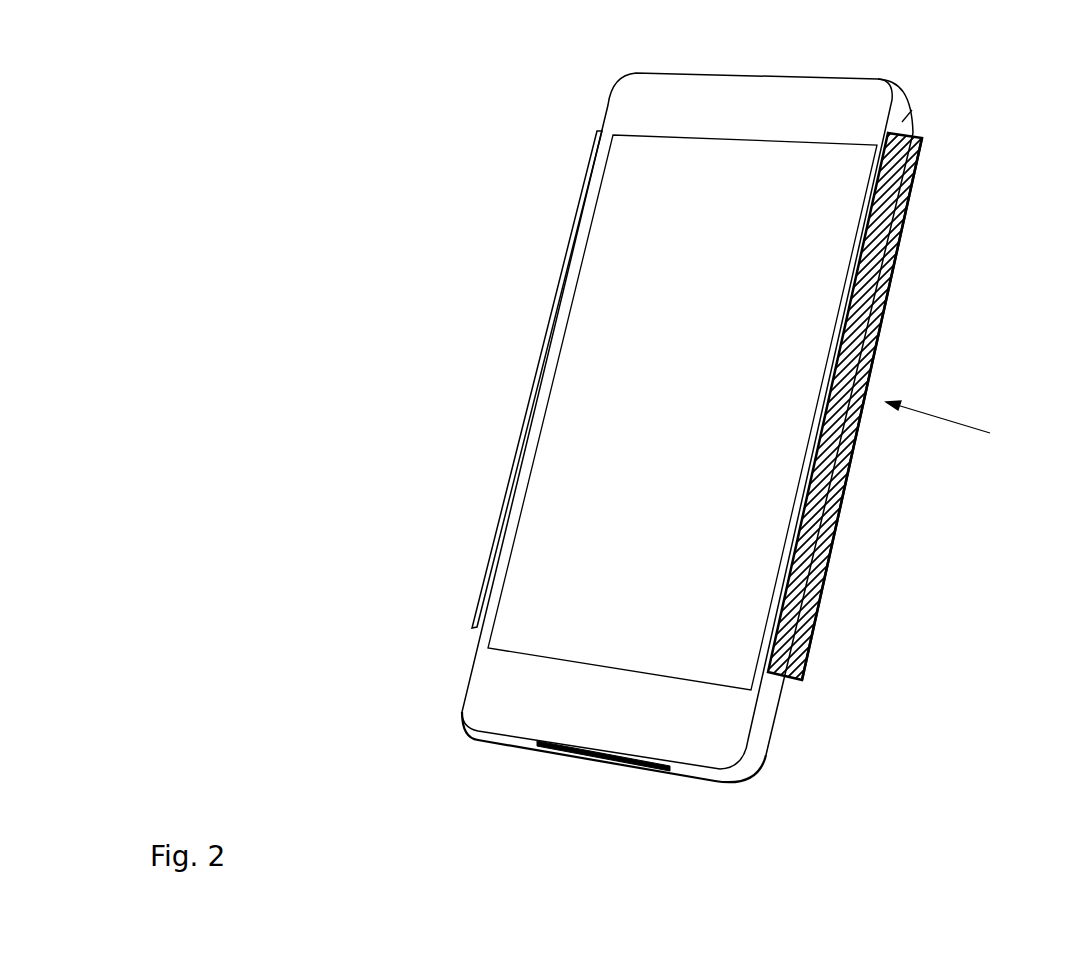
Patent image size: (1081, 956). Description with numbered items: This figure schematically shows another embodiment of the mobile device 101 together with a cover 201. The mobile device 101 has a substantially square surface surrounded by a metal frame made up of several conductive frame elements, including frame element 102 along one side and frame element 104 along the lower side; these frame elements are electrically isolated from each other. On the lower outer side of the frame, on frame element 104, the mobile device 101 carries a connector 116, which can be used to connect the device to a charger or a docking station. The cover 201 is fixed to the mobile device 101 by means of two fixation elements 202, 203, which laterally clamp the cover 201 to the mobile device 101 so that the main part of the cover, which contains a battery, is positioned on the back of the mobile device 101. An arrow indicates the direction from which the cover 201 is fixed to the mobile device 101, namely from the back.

The mobile device 101 is at (728, 90).
The frame element 102 is at (908, 107).
The frame element 104 is at (764, 737).
The connector 116 is at (587, 761).
The cover 201 is at (888, 298).
The fixation element 202 is at (913, 150).
The fixation element 203 is at (577, 218).